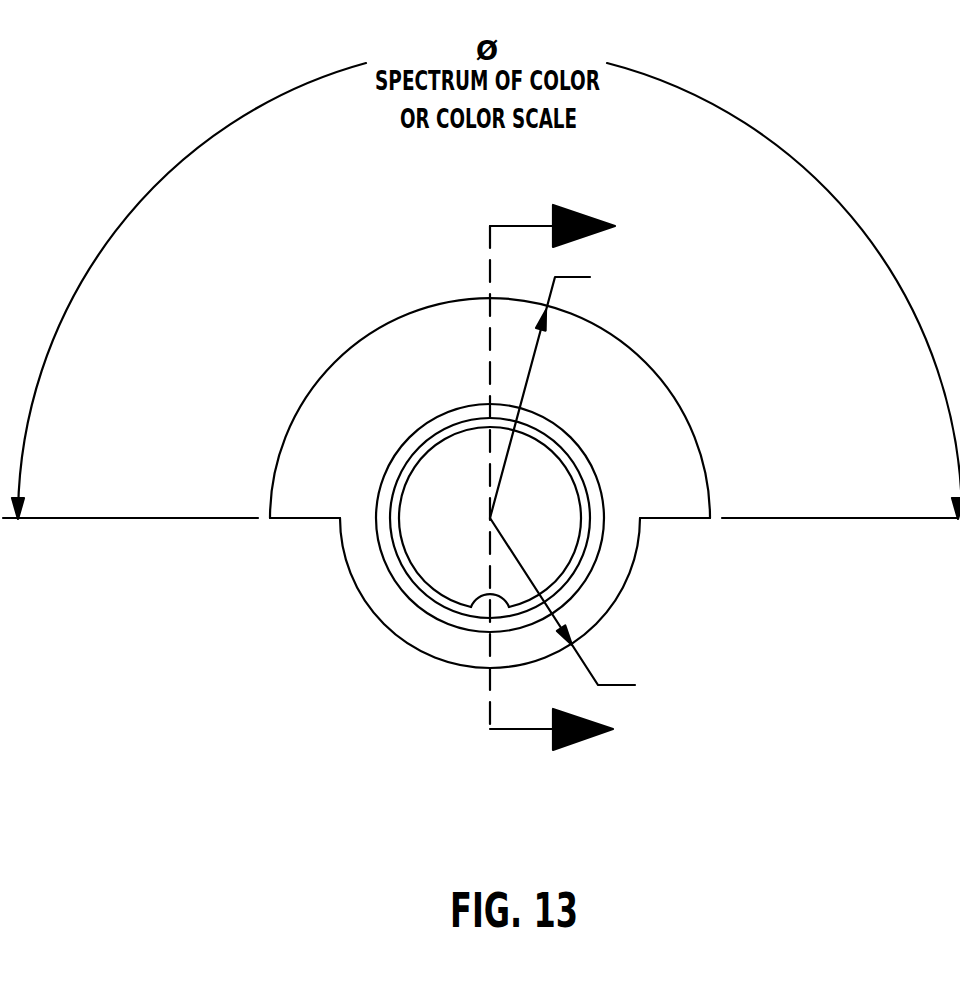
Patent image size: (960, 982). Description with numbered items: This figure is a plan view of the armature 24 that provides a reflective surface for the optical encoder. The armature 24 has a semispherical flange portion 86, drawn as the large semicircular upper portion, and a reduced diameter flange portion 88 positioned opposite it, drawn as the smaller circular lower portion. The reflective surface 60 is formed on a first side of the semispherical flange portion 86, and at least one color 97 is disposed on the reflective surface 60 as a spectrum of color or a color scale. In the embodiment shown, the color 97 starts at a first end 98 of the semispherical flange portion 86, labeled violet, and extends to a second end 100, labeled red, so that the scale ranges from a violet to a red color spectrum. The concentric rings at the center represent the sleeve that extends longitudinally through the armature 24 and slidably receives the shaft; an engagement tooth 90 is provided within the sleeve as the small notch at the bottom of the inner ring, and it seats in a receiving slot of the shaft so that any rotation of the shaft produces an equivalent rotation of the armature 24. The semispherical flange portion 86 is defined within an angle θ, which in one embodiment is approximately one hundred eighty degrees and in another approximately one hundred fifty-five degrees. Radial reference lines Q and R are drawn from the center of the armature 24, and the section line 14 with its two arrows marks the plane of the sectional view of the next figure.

The section line 14- 14 is at (552, 481).
The armature 24 is at (290, 302).
The reflective surface 60 is at (538, 465).
The semispherical flange portion 86 is at (695, 440).
The reduced diameter flange portion 88 is at (372, 615).
The engagement tooth 90 is at (486, 612).
The color 97 is at (318, 477).
The first end 98 is at (695, 521).
The second end 100 is at (297, 521).
The radial reference line Q is at (553, 390).
The radial reference line R is at (573, 611).